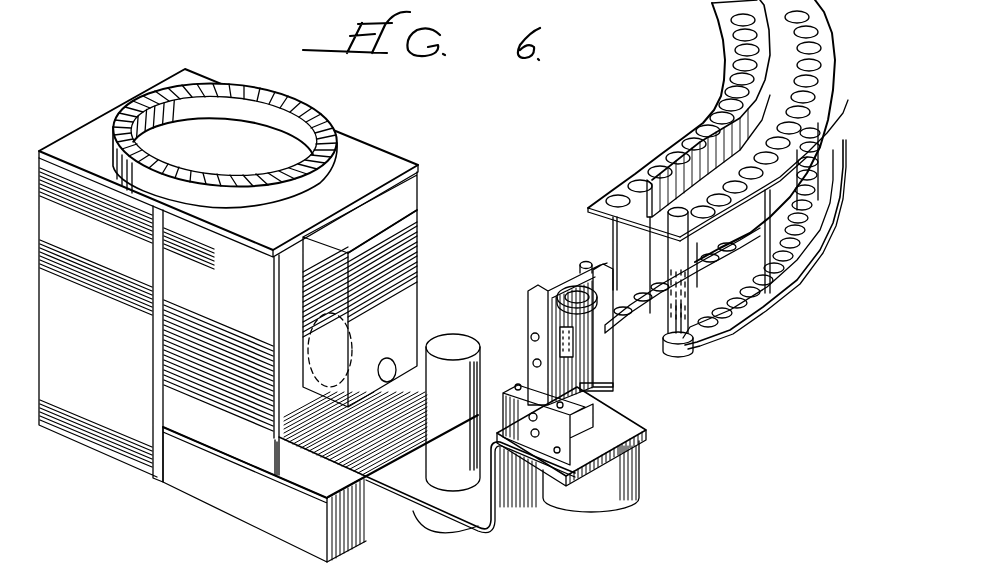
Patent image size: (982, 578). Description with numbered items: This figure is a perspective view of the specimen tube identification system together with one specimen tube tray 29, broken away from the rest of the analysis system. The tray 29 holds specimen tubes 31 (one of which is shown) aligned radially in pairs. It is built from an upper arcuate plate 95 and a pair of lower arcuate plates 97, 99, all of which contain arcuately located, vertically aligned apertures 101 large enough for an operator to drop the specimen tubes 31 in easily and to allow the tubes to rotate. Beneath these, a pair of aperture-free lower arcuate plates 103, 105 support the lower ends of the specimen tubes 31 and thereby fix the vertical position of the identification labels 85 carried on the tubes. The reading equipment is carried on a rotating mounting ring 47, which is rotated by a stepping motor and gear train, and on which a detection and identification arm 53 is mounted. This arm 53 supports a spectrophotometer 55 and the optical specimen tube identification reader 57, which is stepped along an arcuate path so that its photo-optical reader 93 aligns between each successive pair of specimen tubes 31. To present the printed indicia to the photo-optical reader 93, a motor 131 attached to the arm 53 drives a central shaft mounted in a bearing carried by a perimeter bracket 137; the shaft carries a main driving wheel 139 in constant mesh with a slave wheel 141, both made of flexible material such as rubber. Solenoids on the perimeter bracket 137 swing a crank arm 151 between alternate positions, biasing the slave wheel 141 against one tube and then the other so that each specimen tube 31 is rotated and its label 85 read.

The specimen tube tray 29 is at (735, 185).
The specimen tube 31 is at (682, 320).
The mounting ring 47 is at (352, 138).
The detection and identification arm 53 is at (470, 513).
The spectrophotometer 55 is at (119, 440).
The optical specimen tube identification reader 57 is at (610, 376).
The identification label 85 is at (700, 290).
The photo-optical reader 93 is at (558, 348).
The upper arcuate plate 95 is at (825, 87).
The lower arcuate plate 97 is at (636, 283).
The lower arcuate plate 99 is at (790, 212).
The apertures 101 is at (743, 50).
The lower arcuate plate 103 is at (625, 322).
The lower arcuate plate 105 is at (718, 335).
The motor 131 is at (618, 481).
The perimeter bracket 137 is at (526, 300).
The main driving wheel 139 is at (602, 272).
The slave wheel 141 is at (562, 293).
The crank arm 151 is at (607, 385).